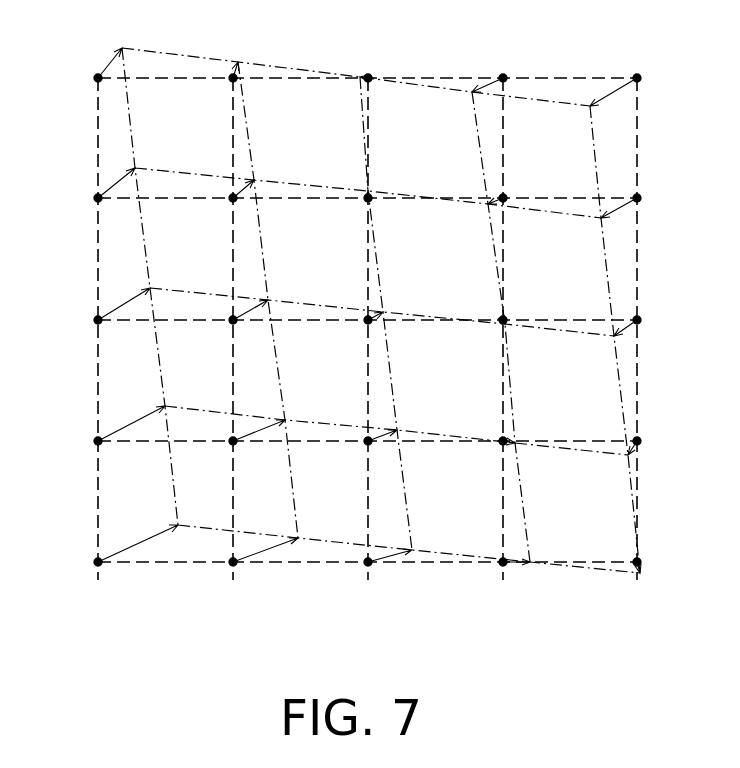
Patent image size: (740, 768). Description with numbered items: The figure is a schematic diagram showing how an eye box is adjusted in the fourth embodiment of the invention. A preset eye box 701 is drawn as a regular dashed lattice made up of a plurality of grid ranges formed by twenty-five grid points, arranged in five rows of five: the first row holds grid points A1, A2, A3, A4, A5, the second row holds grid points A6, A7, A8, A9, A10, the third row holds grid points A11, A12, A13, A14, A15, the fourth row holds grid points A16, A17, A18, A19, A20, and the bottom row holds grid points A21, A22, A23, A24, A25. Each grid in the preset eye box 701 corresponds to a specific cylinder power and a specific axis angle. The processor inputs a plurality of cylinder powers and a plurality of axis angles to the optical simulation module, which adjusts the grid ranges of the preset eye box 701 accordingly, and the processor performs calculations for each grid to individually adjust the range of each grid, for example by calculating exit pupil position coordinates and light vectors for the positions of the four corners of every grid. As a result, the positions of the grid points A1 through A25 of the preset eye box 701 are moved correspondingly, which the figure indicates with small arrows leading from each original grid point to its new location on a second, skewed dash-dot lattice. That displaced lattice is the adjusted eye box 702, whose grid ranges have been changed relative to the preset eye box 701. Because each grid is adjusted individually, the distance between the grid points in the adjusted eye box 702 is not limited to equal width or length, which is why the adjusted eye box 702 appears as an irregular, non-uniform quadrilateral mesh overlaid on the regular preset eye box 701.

The preset eye box 701 is at (565, 78).
The adjusted eye box 702 is at (187, 53).
The grid point A1 is at (98, 78).
The grid point A2 is at (236, 79).
The grid point A3 is at (366, 78).
The grid point A4 is at (502, 78).
The grid point A5 is at (637, 78).
The grid point A6 is at (98, 198).
The grid point A7 is at (233, 198).
The grid point A8 is at (368, 198).
The grid point A9 is at (503, 198).
The grid point A10 is at (637, 198).
The grid point A11 is at (98, 320).
The grid point A12 is at (233, 320).
The grid point A13 is at (368, 320).
The grid point A14 is at (503, 320).
The grid point A15 is at (637, 320).
The grid point A16 is at (98, 441).
The grid point A17 is at (233, 441).
The grid point A18 is at (368, 441).
The grid point A19 is at (503, 441).
The grid point A20 is at (637, 441).
The grid point A21 is at (98, 562).
The grid point A22 is at (233, 562).
The grid point A23 is at (368, 562).
The grid point A24 is at (503, 562).
The grid point A25 is at (637, 562).